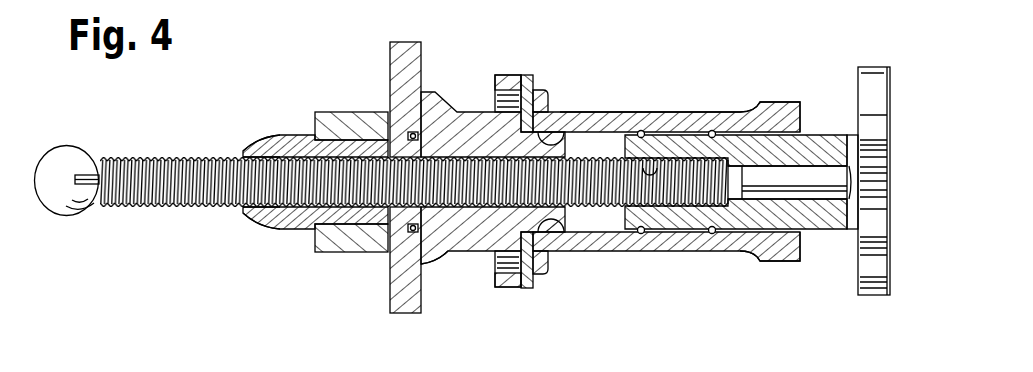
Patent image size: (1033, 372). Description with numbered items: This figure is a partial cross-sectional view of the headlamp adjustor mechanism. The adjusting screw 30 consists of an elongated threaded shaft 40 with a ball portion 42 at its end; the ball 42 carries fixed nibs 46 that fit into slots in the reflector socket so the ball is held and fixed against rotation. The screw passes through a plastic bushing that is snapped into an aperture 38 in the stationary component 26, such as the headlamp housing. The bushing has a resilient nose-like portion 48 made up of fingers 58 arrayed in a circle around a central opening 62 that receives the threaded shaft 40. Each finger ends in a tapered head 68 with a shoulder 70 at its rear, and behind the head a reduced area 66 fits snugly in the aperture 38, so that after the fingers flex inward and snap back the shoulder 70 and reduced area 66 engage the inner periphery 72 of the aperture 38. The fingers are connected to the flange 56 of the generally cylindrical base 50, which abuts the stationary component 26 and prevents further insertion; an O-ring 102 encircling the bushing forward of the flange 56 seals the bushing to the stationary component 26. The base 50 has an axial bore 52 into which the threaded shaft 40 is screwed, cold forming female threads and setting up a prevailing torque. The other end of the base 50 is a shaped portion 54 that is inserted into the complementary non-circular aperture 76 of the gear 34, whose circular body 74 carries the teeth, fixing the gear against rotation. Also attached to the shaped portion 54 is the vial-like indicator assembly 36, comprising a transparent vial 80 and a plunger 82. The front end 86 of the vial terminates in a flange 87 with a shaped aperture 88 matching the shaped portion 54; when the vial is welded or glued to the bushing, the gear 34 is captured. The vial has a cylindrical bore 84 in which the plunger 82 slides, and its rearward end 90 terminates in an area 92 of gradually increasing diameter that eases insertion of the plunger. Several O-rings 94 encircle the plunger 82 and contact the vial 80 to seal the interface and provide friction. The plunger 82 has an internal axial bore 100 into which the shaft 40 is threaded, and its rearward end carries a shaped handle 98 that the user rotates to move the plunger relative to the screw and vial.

The stationary component 26 is at (390, 297).
The adjusting screw 30 is at (123, 208).
The gear member 34 is at (503, 75).
The vial-like indicator assembly 36 is at (690, 112).
The aperture 38 is at (362, 252).
The threaded shaft 40 is at (150, 206).
The ball portion 42 is at (58, 168).
The nibs 46 is at (80, 173).
The nose-like portion 48 is at (260, 229).
The base 50 is at (455, 112).
The axial bore 52 is at (466, 252).
The shaped portion 54 is at (558, 232).
The flange 56 is at (433, 264).
The fingers 58 is at (276, 133).
The opening 62 is at (242, 212).
The reduced area 66 is at (378, 131).
The tapered head 68 is at (246, 151).
The shoulder 70 is at (300, 133).
The inner periphery 72 is at (302, 230).
The circular body 74 is at (530, 91).
The aperture 76 is at (553, 133).
The transparent vial member 80 is at (603, 158).
The plunger member 82 is at (820, 229).
The bore 84 is at (600, 228).
The front end 86 is at (527, 288).
The flange 87 is at (546, 274).
The shaped aperture 88 is at (578, 155).
The rearward end 90 is at (762, 251).
The area of gradually increasing diameter 92 is at (783, 103).
The O-rings 94 is at (642, 232).
The shaped handle 98 is at (866, 295).
The internal axial bore 100 is at (652, 168).
The O-ring 102 is at (408, 133).